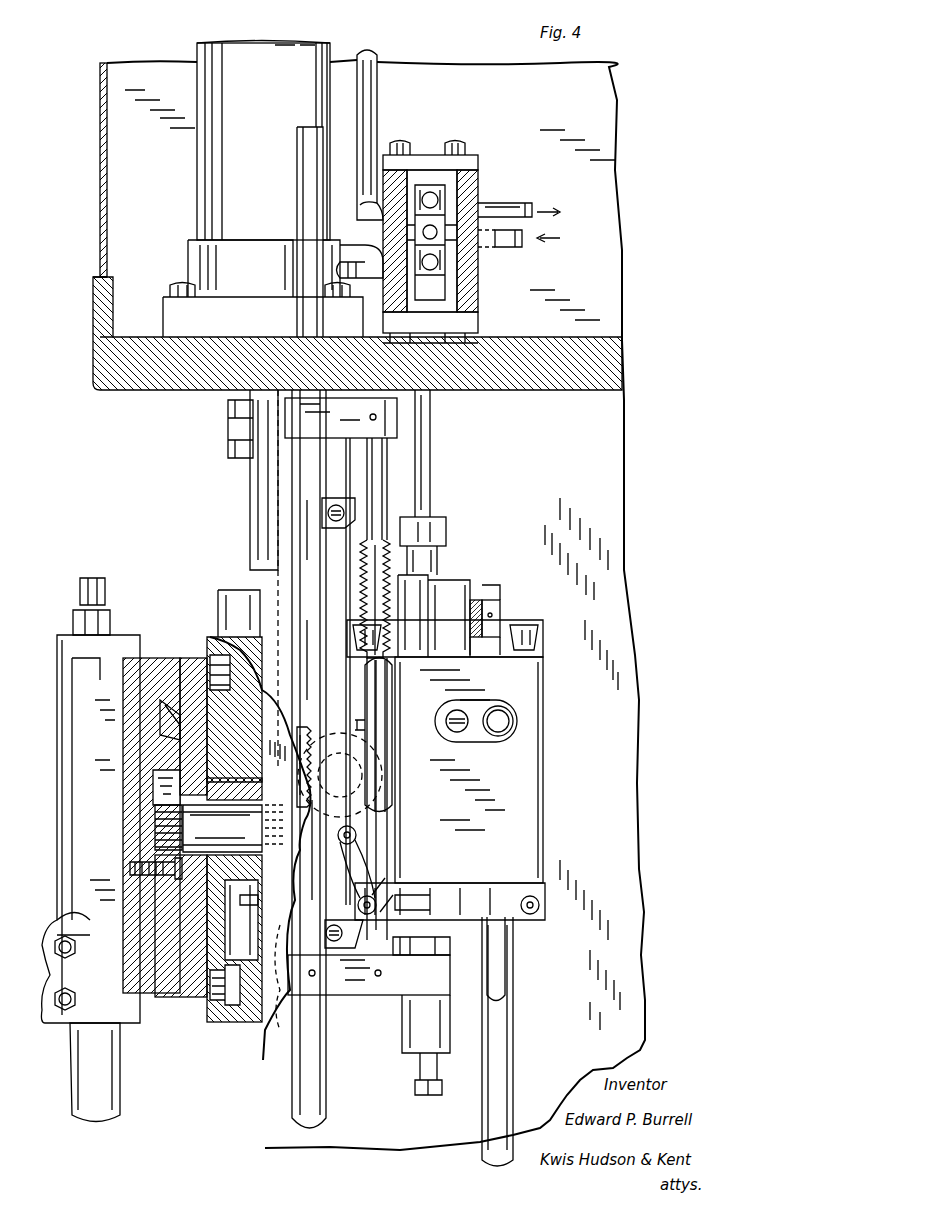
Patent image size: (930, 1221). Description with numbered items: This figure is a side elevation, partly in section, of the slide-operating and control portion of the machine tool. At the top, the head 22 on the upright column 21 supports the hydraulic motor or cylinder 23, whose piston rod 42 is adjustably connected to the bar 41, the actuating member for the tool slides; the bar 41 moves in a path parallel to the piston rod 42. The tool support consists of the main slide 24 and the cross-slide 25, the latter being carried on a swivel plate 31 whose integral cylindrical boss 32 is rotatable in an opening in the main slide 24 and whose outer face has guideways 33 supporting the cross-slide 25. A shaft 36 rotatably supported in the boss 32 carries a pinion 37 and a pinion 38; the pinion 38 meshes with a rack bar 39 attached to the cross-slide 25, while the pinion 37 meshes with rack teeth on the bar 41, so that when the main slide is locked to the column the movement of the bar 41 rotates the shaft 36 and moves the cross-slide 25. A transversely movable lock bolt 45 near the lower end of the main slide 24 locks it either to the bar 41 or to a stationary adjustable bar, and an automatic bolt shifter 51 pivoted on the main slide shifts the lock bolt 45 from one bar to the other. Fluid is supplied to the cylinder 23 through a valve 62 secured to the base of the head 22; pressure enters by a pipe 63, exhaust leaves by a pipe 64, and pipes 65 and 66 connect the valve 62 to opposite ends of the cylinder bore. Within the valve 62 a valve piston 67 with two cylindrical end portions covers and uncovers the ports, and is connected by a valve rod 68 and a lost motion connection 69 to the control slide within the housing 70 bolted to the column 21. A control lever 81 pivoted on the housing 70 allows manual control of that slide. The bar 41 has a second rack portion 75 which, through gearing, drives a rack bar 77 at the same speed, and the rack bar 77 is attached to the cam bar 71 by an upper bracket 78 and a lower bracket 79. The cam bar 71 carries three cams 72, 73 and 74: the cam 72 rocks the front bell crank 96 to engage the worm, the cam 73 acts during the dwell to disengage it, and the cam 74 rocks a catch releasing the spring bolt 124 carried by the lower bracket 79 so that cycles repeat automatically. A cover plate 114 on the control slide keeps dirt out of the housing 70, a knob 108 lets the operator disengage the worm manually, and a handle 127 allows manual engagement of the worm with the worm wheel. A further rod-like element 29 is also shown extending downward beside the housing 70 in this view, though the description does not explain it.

The upright column 21 is at (618, 478).
The head 22 is at (95, 343).
The hydraulic motor or cylinder 23 is at (197, 165).
The main slide 24 is at (235, 595).
The cross-slide 25 is at (150, 658).
The rod 29 is at (515, 1041).
The swivel plate 31 is at (195, 997).
The cylindrical boss 32 is at (245, 792).
The guideways 33 is at (167, 715).
The shaft 36 is at (234, 828).
The pinion 37 is at (258, 890).
The pinion 38 is at (155, 826).
The rack bar 39 is at (150, 876).
The bar 41 is at (228, 425).
The piston rod 42 is at (250, 505).
The lock bolt 45 is at (286, 976).
The bolt shifter 51 is at (252, 910).
The valve 62 is at (449, 229).
The pipe 63 is at (512, 250).
The pipe 64 is at (507, 208).
The pipe 65 is at (345, 250).
The pipe 66 is at (377, 108).
The valve piston 67 is at (445, 262).
The valve rod 68 is at (430, 468).
The lost motion connection 69 is at (440, 535).
The housing 70 is at (488, 770).
The cam bar 71 is at (297, 156).
The cam 72 is at (360, 660).
The cam 73 is at (340, 498).
The cam 74 is at (335, 915).
The rack portion 75 is at (297, 750).
The rack bar 77 is at (372, 490).
The bracket 78 is at (385, 414).
The lower bracket 79 is at (355, 995).
The control lever 81 is at (500, 612).
The front bell crank 96 is at (362, 858).
The knob 108 is at (505, 730).
The cover plate 114 is at (370, 700).
The spring bolt 124 is at (445, 945).
The handle 127 is at (498, 968).